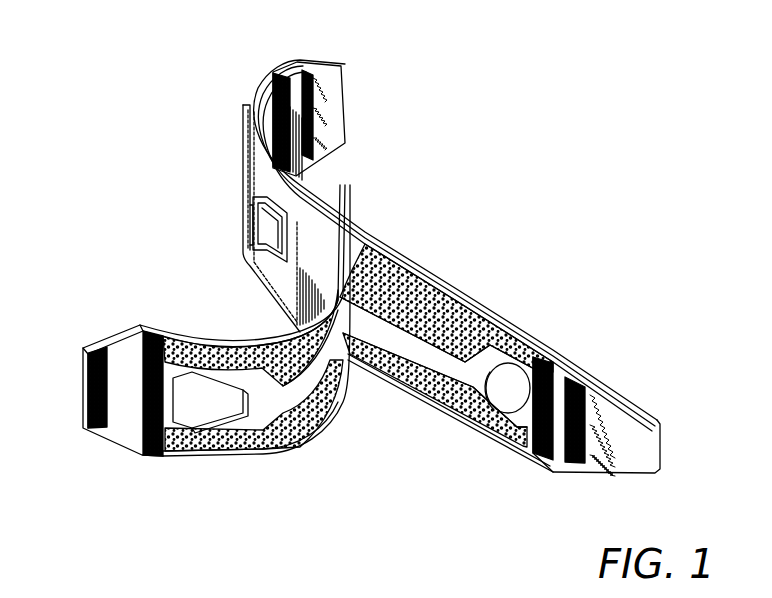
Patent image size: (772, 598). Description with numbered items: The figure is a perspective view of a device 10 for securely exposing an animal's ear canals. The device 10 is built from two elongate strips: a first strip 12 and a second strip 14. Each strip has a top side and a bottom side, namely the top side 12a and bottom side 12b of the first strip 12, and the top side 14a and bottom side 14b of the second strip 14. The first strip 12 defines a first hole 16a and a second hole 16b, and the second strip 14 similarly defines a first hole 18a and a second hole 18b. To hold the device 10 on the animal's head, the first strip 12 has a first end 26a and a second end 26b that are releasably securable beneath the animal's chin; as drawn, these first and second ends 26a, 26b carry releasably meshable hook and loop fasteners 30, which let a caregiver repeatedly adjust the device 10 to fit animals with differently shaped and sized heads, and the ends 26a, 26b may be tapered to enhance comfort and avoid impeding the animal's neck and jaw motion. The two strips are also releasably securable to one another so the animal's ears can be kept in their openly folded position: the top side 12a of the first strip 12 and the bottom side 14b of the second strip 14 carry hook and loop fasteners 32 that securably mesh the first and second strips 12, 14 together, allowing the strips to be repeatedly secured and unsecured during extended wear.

The device 10 is at (100, 140).
The first strip 12 is at (455, 298).
The top side of first strip 12a is at (430, 350).
The bottom side of first strip 12b is at (368, 231).
The second strip 14 is at (237, 340).
The top side of second strip 14a is at (308, 257).
The bottom side of second strip 14b is at (303, 393).
The first hole 16a is at (524, 394).
The second hole 16b is at (283, 243).
The first hole 18a is at (213, 410).
The second hole 18b is at (250, 218).
The first end 26a is at (630, 408).
The second end 26b is at (338, 90).
The hook and loop fasteners 30 is at (277, 85).
The hook and loop fasteners 32 is at (370, 340).